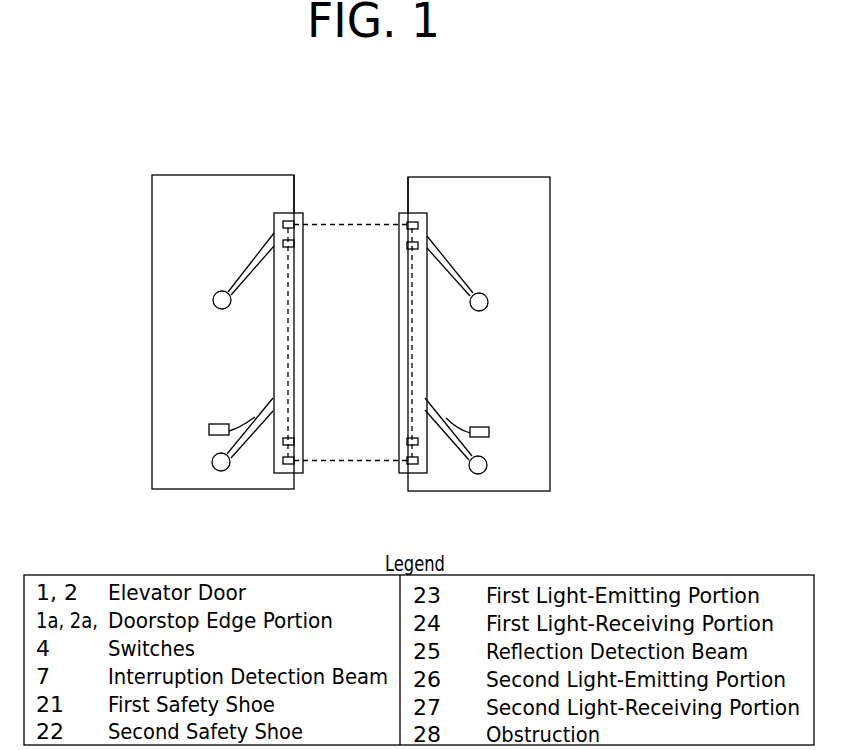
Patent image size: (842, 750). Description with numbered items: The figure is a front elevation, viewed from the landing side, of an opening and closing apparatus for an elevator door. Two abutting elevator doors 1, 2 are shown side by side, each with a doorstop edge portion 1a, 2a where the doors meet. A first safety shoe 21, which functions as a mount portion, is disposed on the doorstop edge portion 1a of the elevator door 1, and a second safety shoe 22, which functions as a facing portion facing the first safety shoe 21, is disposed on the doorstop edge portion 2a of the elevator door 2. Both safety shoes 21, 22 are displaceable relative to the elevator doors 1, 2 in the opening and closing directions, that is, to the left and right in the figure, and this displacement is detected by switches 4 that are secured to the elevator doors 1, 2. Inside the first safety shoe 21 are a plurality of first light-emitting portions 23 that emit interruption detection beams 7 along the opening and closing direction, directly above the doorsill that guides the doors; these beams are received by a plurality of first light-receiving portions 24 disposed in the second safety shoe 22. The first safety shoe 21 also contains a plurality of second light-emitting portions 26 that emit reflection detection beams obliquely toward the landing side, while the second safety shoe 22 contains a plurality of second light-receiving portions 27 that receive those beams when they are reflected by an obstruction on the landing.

The elevator door 1 is at (200, 175).
The elevator door 2 is at (517, 177).
The doorstop edge portion 1a is at (294, 190).
The doorstop edge portion 2a is at (408, 192).
The switches 4 is at (220, 424).
The interruption detection beams 7 is at (354, 223).
The first safety shoe 21 is at (287, 212).
The second safety shoe 22 is at (427, 215).
The first light-emitting portions 23 is at (297, 222).
The first light-receiving portions 24 is at (403, 222).
The second light-emitting portions 26 is at (283, 243).
The second light-receiving portions 27 is at (418, 245).